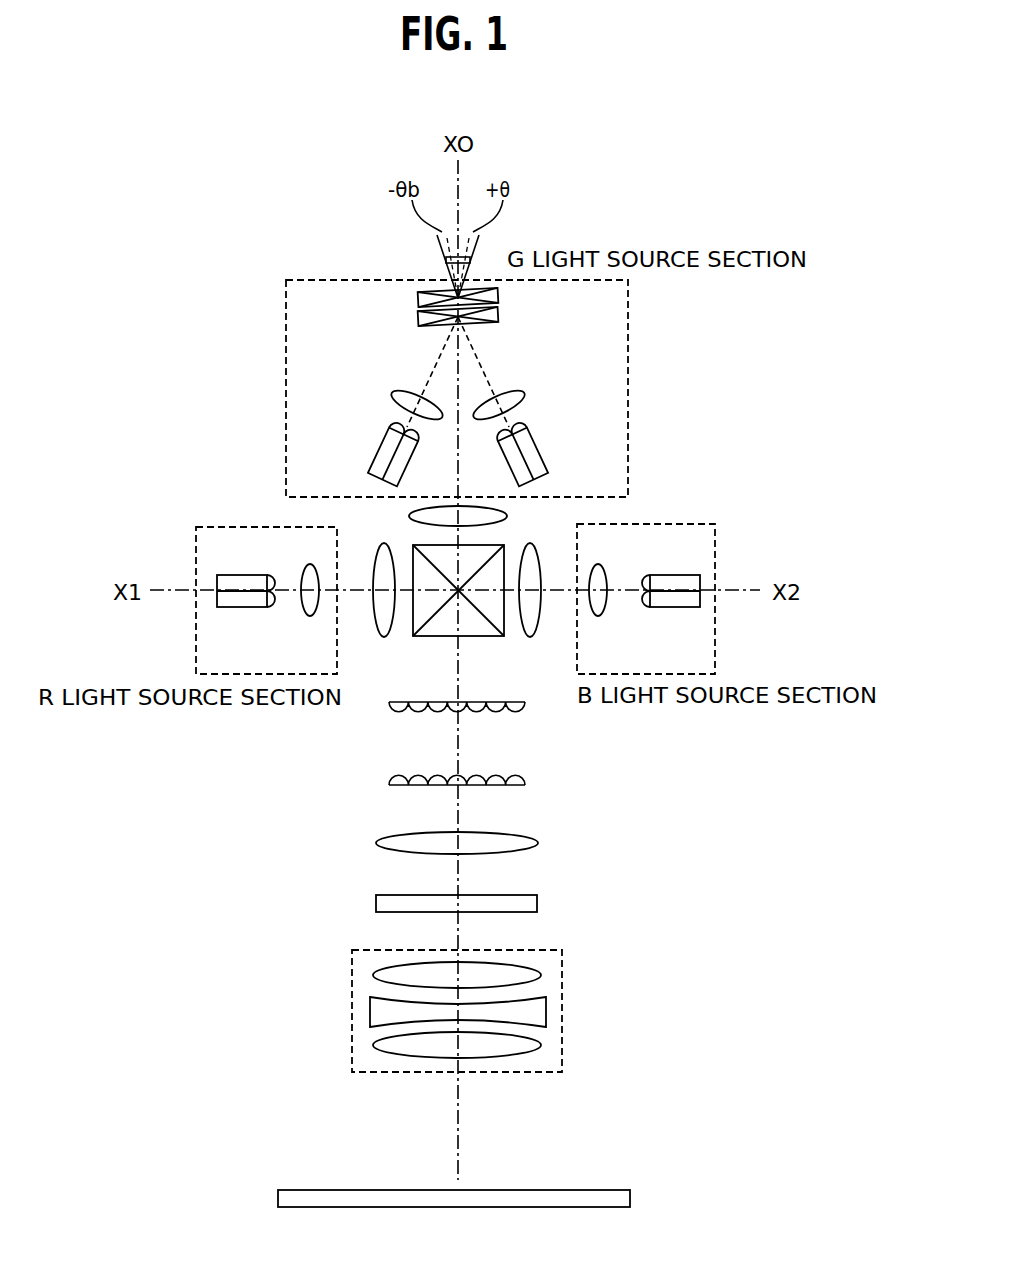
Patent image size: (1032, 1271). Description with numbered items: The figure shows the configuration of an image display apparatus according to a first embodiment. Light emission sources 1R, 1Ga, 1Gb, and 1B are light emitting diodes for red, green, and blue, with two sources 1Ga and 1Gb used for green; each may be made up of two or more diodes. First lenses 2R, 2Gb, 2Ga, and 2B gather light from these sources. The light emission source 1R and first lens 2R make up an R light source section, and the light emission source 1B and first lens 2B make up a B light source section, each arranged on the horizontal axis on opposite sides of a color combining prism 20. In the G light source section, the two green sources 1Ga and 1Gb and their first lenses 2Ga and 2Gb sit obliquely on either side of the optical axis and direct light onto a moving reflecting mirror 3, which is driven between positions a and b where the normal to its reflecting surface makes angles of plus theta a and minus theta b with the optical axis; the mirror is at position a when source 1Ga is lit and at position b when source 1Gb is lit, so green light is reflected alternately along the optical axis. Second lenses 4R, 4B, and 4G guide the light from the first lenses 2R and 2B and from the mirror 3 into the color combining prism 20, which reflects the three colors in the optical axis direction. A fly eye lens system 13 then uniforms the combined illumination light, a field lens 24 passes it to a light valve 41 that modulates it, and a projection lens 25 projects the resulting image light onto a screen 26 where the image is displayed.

The moving reflecting mirror 3 is at (405, 285).
The position a is at (514, 294).
The position b is at (514, 320).
The first lens 2Gb is at (393, 402).
The first lens 2Ga is at (523, 402).
The light emission source 1Gb is at (370, 466).
The light emission source 1Ga is at (591, 455).
The second lens 4G is at (500, 520).
The light emission source 1R is at (235, 608).
The first lens 2R is at (309, 617).
The second lens 4R is at (379, 630).
The color combining prism 20 is at (478, 638).
The second lens 4B is at (536, 630).
The first lens 2B is at (600, 616).
The light emission source 1B is at (678, 608).
The fly eye lens system 13 is at (540, 695).
The field lens 24 is at (530, 836).
The light valve 41 is at (537, 896).
The projection lens 25 is at (562, 1017).
The screen 26 is at (630, 1190).